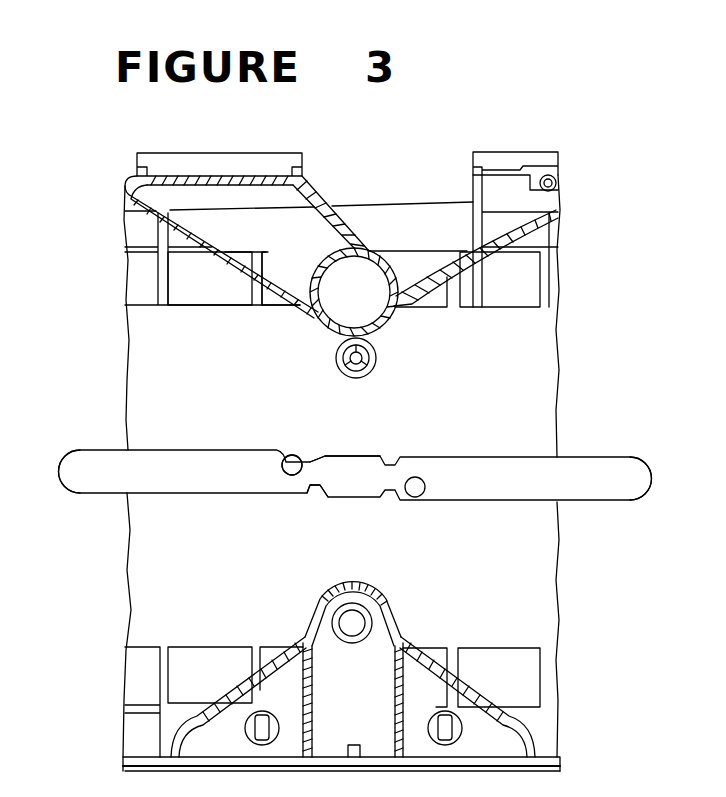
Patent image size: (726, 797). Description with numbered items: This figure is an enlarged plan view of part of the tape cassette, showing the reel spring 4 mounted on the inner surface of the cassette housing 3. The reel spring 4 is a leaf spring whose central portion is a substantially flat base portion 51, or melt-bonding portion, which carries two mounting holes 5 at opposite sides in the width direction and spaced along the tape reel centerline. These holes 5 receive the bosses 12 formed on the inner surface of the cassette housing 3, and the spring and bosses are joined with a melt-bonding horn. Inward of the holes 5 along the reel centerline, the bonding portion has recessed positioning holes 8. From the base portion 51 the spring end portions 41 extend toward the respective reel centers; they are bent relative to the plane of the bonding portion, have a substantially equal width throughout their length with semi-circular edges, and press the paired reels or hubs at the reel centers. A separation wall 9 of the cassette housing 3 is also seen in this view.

The cassette housing 3 is at (341, 461).
The reel spring 4 is at (520, 451).
The spring end portion 41 is at (83, 496).
The mounting hole 5 is at (282, 458).
The base portion 51 is at (342, 468).
The positioning hole 8 is at (328, 495).
The separation wall 9 is at (397, 626).
The boss 12 is at (337, 366).